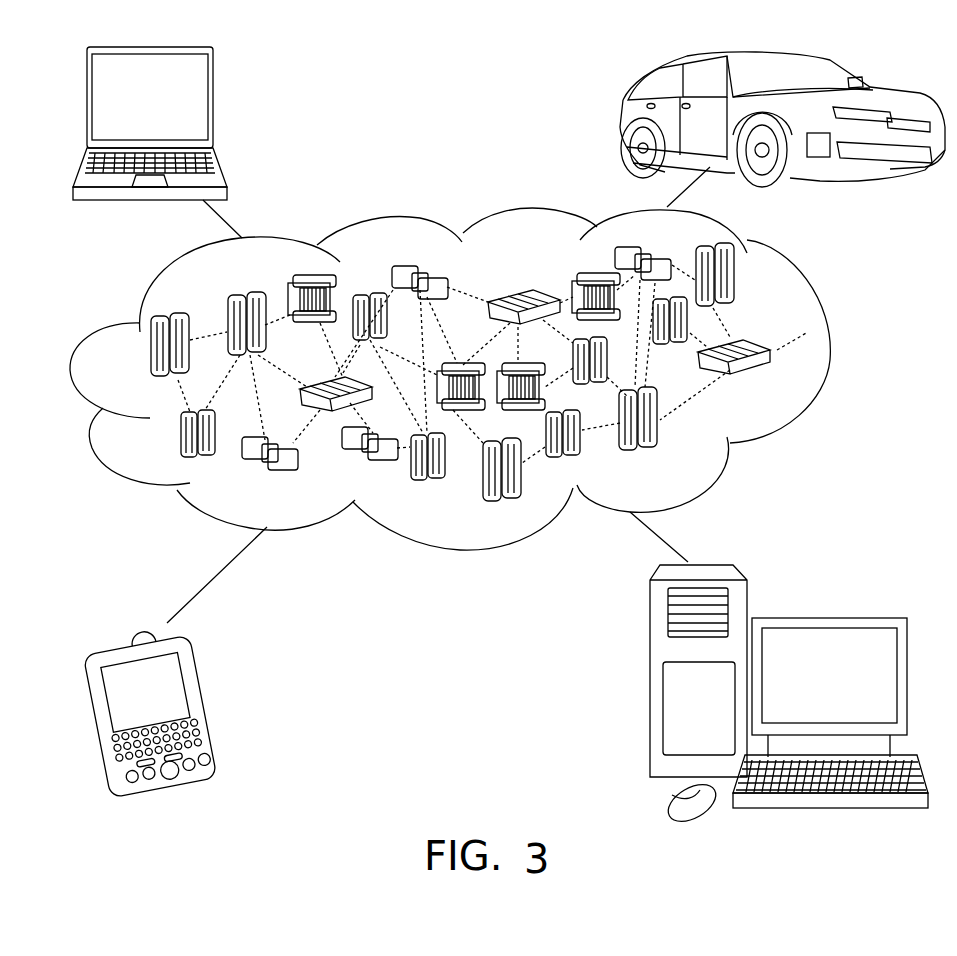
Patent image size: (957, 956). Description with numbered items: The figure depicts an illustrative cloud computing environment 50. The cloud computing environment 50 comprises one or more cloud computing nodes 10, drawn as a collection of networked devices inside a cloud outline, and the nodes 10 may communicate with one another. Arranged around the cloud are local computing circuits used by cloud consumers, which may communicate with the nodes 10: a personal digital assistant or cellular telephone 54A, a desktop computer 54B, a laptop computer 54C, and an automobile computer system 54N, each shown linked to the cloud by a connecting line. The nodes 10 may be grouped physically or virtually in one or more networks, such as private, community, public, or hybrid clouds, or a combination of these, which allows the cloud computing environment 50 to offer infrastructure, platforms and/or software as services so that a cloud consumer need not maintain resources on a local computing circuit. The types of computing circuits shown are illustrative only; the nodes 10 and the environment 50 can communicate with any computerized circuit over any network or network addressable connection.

The cloud computing node 10 is at (773, 382).
The cloud computing environment 50 is at (477, 379).
The personal digital assistant or cellular telephone 54A is at (207, 703).
The desktop computer 54B is at (823, 615).
The laptop computer 54C is at (213, 105).
The automobile computer system 54N is at (622, 120).